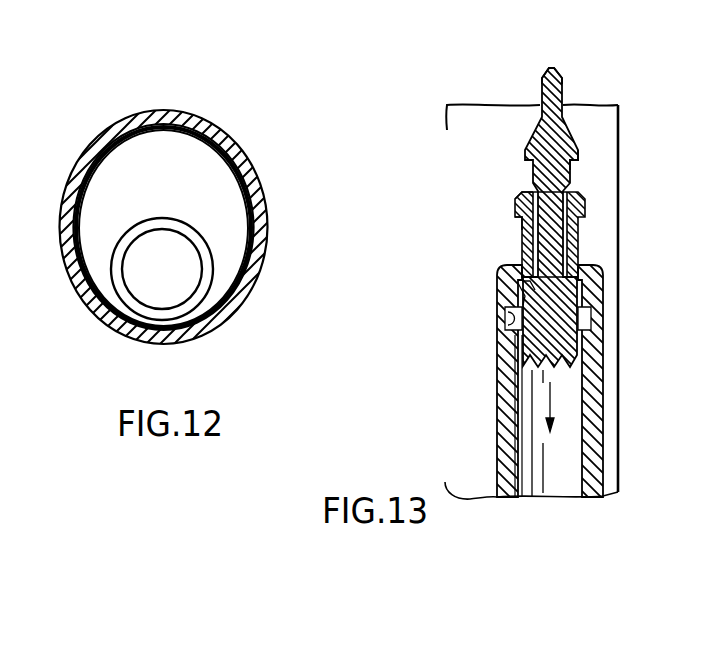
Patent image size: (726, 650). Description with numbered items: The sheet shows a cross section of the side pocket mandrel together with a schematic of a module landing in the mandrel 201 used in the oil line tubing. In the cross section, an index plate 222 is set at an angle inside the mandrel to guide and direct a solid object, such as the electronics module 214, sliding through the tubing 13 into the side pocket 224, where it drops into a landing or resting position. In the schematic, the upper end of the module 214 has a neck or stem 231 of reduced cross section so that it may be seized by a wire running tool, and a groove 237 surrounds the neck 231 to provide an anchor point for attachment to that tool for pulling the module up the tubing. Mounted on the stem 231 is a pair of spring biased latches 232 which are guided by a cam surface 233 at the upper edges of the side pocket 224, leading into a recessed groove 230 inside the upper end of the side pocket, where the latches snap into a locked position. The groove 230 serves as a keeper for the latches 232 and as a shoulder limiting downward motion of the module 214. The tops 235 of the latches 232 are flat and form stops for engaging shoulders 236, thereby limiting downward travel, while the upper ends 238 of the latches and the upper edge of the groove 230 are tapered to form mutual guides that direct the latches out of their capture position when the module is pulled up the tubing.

In FIG. 12, the mandrel 201 is at (172, 112).
In FIG. 13, the mandrel 201 is at (617, 313).
In FIG. 12, the index plate 222 is at (190, 195).
In FIG. 12, the tubing 13 is at (175, 284).
In FIG. 13, the groove 237 is at (562, 87).
In FIG. 13, the shoulders 236 is at (573, 167).
In FIG. 13, the neck or stem 231 is at (558, 176).
In FIG. 13, the tops of the latches 235 is at (528, 192).
In FIG. 13, the upper ends of the latches 238 is at (516, 196).
In FIG. 13, the spring biased latches 232 is at (572, 248).
In FIG. 13, the electronics module 214 is at (530, 284).
In FIG. 13, the cam surface 233 is at (600, 278).
In FIG. 13, the recessed groove 230 is at (500, 311).
In FIG. 13, the side pocket 224 is at (595, 384).